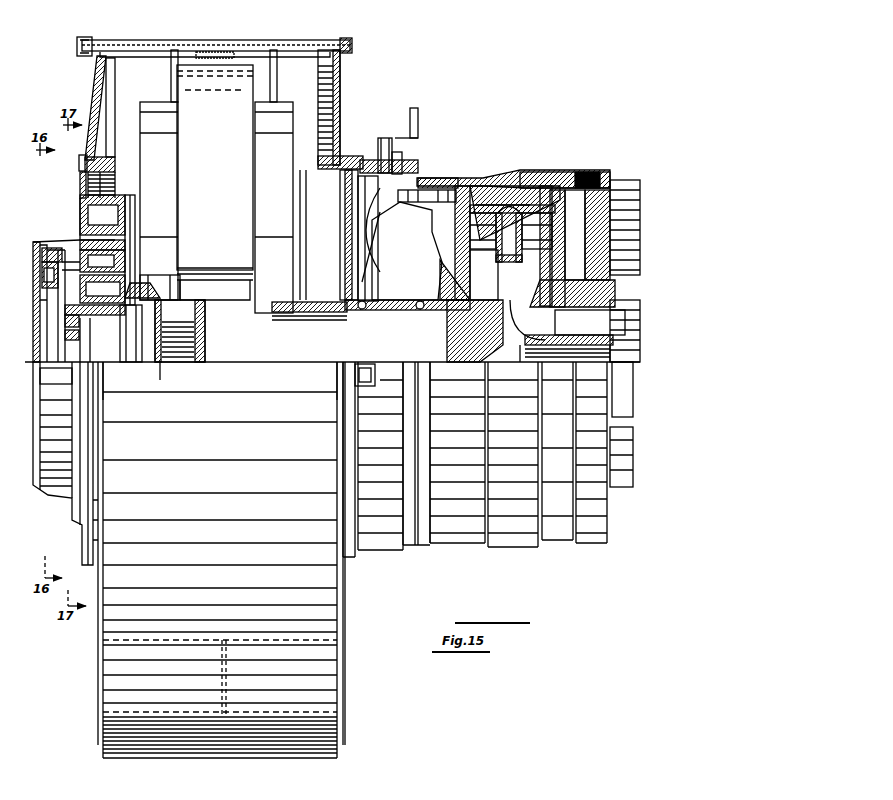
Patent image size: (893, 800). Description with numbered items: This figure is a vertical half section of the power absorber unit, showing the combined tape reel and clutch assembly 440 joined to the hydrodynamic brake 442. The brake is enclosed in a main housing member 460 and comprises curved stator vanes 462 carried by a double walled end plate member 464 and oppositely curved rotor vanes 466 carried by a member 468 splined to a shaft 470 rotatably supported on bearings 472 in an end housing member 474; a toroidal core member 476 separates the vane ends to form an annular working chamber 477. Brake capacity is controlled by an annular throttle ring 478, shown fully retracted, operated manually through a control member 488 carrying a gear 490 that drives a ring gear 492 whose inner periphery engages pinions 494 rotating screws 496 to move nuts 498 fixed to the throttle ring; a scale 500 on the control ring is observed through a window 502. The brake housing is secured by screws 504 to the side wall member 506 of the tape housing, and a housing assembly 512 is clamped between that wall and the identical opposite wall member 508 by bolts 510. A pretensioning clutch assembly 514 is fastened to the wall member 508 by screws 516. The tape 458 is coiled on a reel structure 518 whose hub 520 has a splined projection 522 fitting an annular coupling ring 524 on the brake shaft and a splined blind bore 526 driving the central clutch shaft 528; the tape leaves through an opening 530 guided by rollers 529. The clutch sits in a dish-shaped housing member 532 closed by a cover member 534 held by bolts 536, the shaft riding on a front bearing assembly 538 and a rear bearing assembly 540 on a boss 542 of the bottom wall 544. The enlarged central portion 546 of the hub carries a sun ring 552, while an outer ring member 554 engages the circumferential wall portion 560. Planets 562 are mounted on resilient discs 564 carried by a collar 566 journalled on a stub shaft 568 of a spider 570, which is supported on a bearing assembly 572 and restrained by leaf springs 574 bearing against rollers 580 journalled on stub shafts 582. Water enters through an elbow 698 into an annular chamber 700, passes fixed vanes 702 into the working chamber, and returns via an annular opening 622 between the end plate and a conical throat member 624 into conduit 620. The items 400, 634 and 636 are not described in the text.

The valve assembly 400 is at (380, 225).
The combined tape reel and clutch assembly 440 is at (250, 38).
The hydrodynamic brake 442 is at (478, 185).
The tape 458 is at (192, 65).
The main housing member 460 is at (540, 180).
The stator vanes 462 is at (524, 235).
The double walled end plate member 464 is at (565, 330).
The rotor vanes 466 is at (512, 227).
The rotor vane carrying member 468 is at (484, 275).
The shaft 470 is at (372, 376).
The bearings 472 is at (386, 298).
The end housing member 474 is at (425, 225).
The toroidal core member 476 is at (528, 186).
The annular working chamber 477 is at (502, 197).
The annular throttle ring 478 is at (440, 190).
The pin 488 is at (408, 135).
The gear 490 is at (402, 160).
The ring gear 492 is at (368, 165).
The pinions 494 is at (376, 247).
The screws 496 is at (465, 186).
The nuts 498 is at (418, 190).
The scale 500 is at (340, 196).
The window 502 is at (363, 388).
The screws 504 is at (352, 165).
The side wall member 506 is at (342, 90).
The opposite wall member 508 is at (100, 103).
The bolts 510 is at (88, 38).
The housing assembly 512 is at (158, 40).
The pretensioning clutch assembly 514 is at (62, 205).
The screws 516 is at (80, 162).
The reel structure 518 is at (257, 195).
The hub 520 is at (221, 560).
The splined projection 522 is at (300, 381).
The annular coupling ring 524 is at (288, 302).
The splined blind bore 526 is at (204, 315).
The central clutch shaft 528 is at (150, 362).
The rollers 529 is at (158, 655).
The opening 530 is at (248, 640).
The dish-shaped housing member 532 is at (30, 236).
The cover member 534 is at (130, 226).
The bolts 536 is at (125, 210).
The front bearing assembly 538 is at (165, 290).
The rear bearing assembly 540 is at (90, 345).
The boss 542 is at (103, 378).
The bottom wall 544 is at (65, 463).
The enlarged central portion 546 is at (129, 333).
The sun ring 552 is at (130, 290).
The outer ring member 554 is at (115, 195).
The circumferential wall portion 560 is at (82, 195).
The planets 562 is at (125, 245).
The resilient discs 564 is at (102, 289).
The collar 566 is at (102, 215).
The stub shaft 568 is at (75, 245).
The spider 570 is at (82, 318).
The bearing assembly 572 is at (79, 335).
The leaf springs 574 is at (56, 376).
The rollers 580 is at (40, 292).
The stub shafts 582 is at (58, 278).
The conduit 620 is at (600, 305).
The annular opening 622 is at (580, 352).
The conical throat member 624 is at (545, 336).
The member 634 is at (630, 178).
The seal 636 is at (592, 174).
The elbow 698 is at (622, 460).
The annular chamber 700 is at (580, 178).
The fixed vanes 702 is at (565, 190).